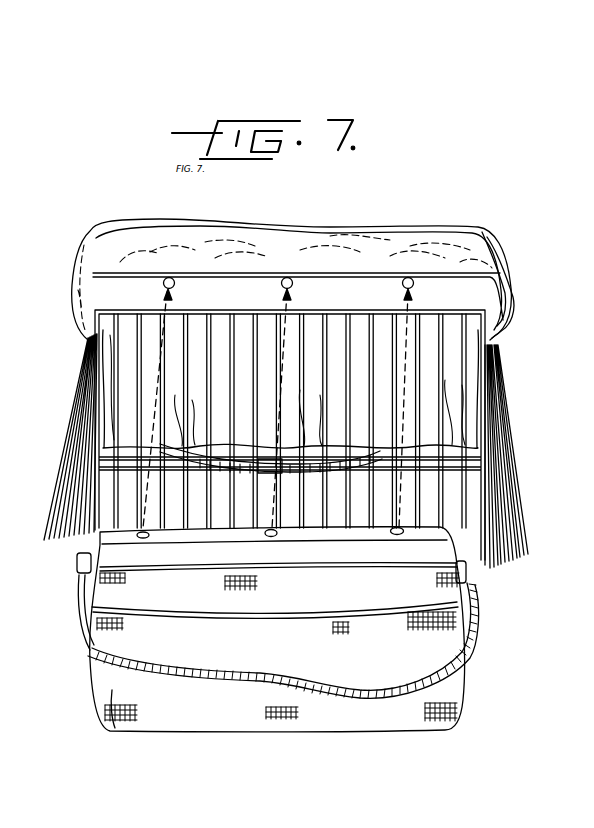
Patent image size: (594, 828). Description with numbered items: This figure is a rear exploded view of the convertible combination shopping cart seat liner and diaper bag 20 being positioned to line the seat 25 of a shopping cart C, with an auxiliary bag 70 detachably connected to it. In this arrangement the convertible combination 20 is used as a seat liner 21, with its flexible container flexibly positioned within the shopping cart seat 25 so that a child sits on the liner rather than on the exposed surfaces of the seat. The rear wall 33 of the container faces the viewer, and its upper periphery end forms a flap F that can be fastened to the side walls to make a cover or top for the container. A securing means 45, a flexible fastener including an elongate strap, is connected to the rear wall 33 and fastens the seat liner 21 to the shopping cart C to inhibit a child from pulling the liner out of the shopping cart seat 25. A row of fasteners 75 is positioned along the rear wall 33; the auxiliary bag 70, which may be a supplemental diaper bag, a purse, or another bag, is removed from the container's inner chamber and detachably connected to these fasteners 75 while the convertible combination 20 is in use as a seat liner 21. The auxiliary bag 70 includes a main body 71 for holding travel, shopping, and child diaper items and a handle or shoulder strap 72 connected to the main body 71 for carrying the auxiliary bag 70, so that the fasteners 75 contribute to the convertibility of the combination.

The convertible combination shopping cart seat liner and diaper bag 20 is at (76, 160).
The seat liner 21 is at (380, 250).
The shopping cart seat 25 is at (493, 375).
The rear wall 33 is at (490, 238).
The securing means 45 is at (168, 450).
The auxiliary bag 70 is at (410, 655).
The main body 71 is at (197, 718).
The shoulder strap 72 is at (343, 700).
The fasteners 75 is at (285, 278).
The shopping cart C is at (522, 521).
The flaps F is at (290, 262).